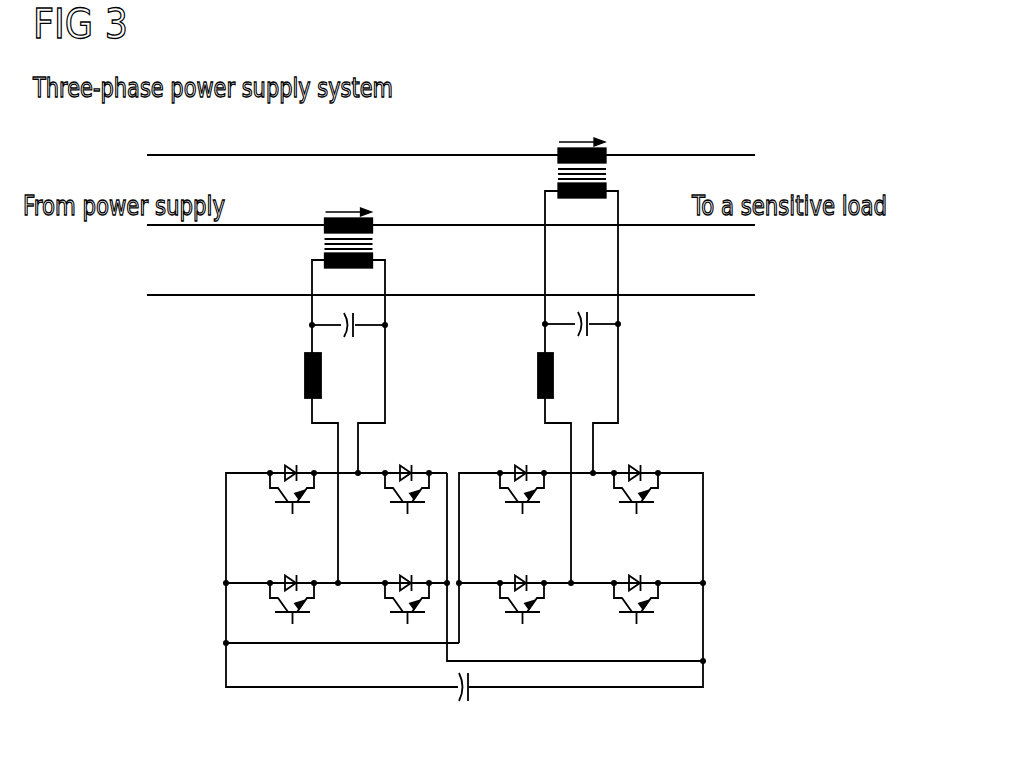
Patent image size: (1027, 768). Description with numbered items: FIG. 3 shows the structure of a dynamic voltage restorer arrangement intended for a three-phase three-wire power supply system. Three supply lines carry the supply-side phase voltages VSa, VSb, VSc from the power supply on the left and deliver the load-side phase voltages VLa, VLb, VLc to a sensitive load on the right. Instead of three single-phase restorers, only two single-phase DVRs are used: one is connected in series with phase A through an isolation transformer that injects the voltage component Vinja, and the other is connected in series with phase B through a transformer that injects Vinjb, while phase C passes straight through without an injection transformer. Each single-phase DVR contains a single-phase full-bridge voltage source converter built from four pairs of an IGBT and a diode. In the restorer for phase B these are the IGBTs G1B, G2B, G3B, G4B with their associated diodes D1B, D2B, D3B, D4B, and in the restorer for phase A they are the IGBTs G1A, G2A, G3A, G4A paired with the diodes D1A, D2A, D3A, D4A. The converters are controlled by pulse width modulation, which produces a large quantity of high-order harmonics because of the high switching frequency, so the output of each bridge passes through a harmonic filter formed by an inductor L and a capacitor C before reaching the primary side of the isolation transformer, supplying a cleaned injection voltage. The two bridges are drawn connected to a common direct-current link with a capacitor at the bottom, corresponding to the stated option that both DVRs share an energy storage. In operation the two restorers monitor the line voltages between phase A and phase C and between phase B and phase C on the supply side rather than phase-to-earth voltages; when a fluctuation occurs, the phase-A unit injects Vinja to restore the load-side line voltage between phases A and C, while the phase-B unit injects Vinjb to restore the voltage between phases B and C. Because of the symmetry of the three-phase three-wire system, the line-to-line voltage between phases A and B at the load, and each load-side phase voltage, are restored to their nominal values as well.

The phase A supply-side voltage VSa is at (298, 136).
The phase B supply-side voltage VSb is at (298, 206).
The phase C supply-side voltage VSc is at (298, 276).
The phase A load-side voltage VLa is at (602, 135).
The phase B load-side voltage VLb is at (602, 205).
The phase C load-side voltage VLc is at (602, 275).
The phase A injection voltage Vinja is at (582, 145).
The phase B injection voltage Vinjb is at (349, 216).
The filter inductor L is at (417, 375).
The filter capacitor C is at (465, 345).
The diode D1B is at (297, 456).
The diode D2B is at (412, 456).
The diode D3B is at (297, 566).
The diode D4B is at (412, 566).
The diode D1A is at (527, 457).
The diode D2A is at (641, 457).
The diode D3A is at (527, 567).
The diode D4A is at (641, 567).
The IGBT G1B is at (274, 500).
The IGBT G2B is at (389, 500).
The IGBT G3B is at (274, 610).
The IGBT G4B is at (389, 610).
The IGBT G1A is at (503, 499).
The IGBT G2A is at (620, 499).
The IGBT G3A is at (503, 609).
The IGBT G4A is at (620, 609).